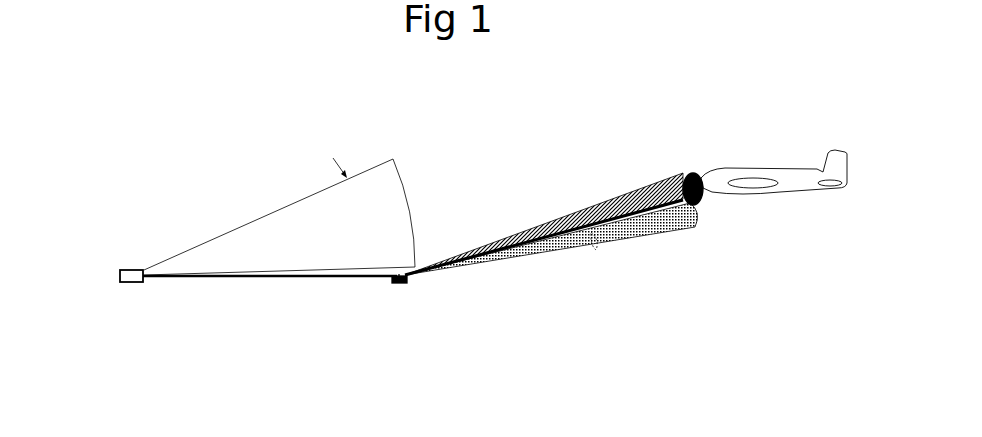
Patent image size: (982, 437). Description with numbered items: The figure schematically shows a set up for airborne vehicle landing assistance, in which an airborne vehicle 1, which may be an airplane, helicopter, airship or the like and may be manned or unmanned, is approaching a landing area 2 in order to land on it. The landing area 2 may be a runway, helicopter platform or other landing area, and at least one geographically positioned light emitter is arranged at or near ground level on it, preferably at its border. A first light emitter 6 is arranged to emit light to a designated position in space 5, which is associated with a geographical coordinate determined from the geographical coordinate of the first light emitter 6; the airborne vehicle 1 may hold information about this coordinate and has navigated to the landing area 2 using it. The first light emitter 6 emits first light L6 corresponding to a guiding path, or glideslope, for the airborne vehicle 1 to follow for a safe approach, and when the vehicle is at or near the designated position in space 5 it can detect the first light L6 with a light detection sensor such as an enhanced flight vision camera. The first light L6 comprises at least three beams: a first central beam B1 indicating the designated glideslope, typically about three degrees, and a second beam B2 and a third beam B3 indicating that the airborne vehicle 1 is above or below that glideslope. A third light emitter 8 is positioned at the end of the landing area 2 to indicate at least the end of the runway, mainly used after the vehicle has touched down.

The airborne vehicle 1 is at (800, 195).
The landing area 2 is at (213, 278).
The designated position in space 5 is at (700, 205).
The first light emitter 6 is at (398, 283).
The third light emitter 8 is at (120, 278).
The first beam B1 is at (670, 197).
The second beam B2 is at (670, 173).
The third beam B3 is at (642, 192).
The first light L6 is at (566, 252).